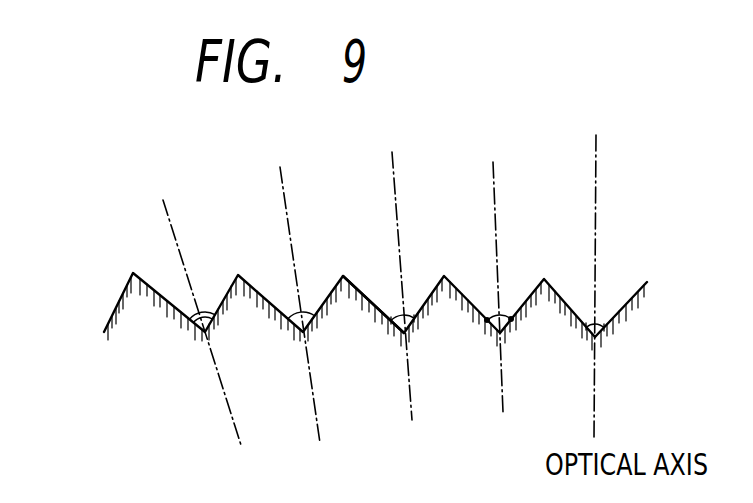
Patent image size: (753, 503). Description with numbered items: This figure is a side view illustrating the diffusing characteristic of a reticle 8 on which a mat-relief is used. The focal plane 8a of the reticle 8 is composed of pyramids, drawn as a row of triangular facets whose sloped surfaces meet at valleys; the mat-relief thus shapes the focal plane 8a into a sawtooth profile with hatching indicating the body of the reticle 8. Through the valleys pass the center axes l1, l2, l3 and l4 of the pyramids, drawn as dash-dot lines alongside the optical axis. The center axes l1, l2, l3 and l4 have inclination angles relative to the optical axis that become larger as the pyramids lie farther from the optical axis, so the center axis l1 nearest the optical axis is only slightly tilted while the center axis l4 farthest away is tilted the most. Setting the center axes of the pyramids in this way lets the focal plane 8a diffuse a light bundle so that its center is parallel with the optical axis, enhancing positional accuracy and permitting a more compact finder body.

The reticle 8 is at (366, 469).
The focal plane 8a is at (358, 290).
The center axis of pyramid l1 is at (501, 167).
The center axis of pyramid l2 is at (400, 160).
The center axis of pyramid l3 is at (287, 163).
The center axis of pyramid l4 is at (168, 189).